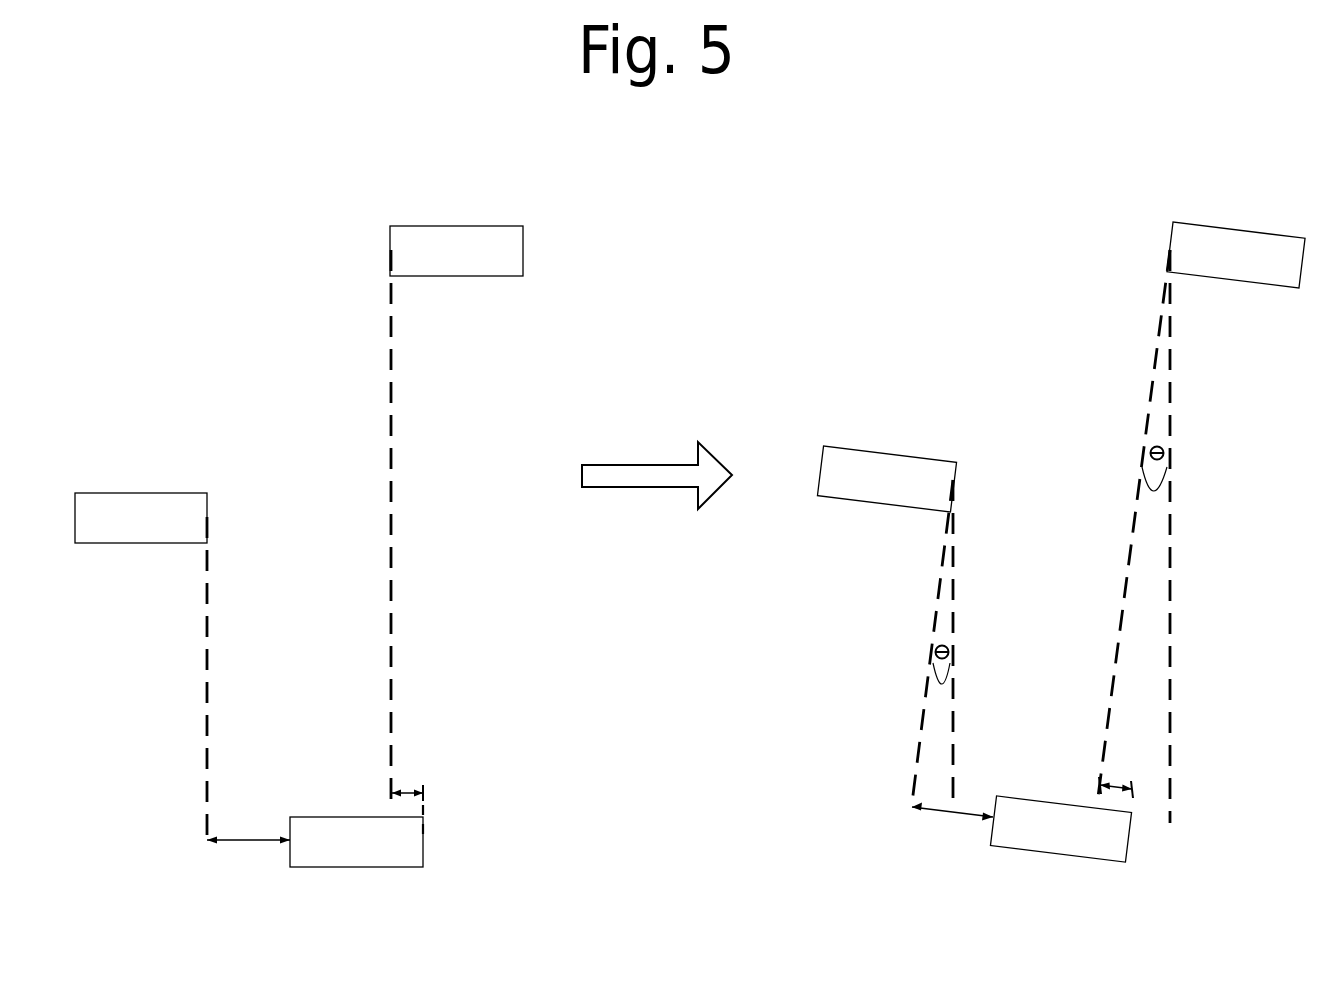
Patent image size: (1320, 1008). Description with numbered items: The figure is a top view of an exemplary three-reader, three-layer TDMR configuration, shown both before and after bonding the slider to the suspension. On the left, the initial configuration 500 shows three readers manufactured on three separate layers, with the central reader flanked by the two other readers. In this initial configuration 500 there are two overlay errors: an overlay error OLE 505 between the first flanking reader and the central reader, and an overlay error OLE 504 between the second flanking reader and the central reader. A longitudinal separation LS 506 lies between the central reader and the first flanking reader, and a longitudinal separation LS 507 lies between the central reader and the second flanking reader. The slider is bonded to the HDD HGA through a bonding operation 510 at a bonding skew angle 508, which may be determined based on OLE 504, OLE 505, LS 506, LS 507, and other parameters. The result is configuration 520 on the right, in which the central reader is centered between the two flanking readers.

The configuration before bonding 500 is at (283, 133).
The configuration after bonding 520 is at (1083, 133).
The bonding operation 510 is at (649, 432).
The overlay error 504 is at (403, 797).
The overlay error 505 is at (258, 843).
The longitudinal separation 506 is at (207, 677).
The longitudinal separation 507 is at (391, 525).
The bonding skew angle 508 is at (962, 650).